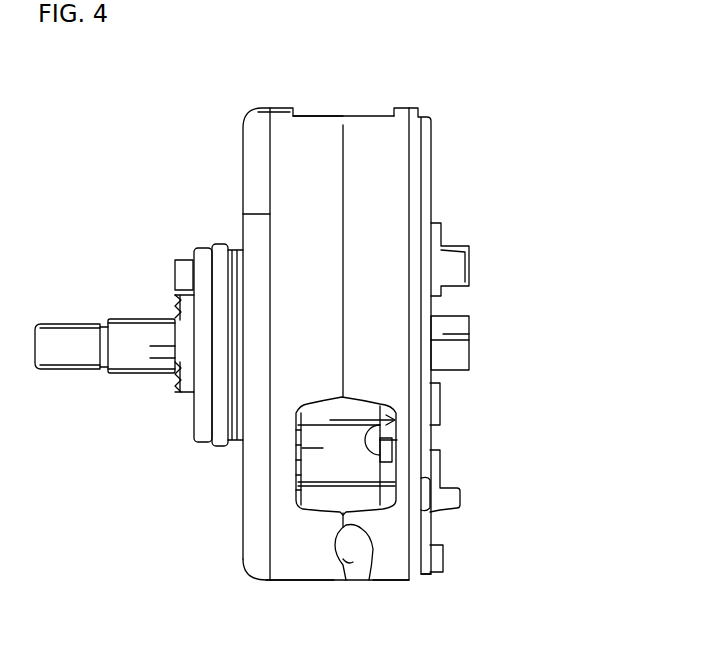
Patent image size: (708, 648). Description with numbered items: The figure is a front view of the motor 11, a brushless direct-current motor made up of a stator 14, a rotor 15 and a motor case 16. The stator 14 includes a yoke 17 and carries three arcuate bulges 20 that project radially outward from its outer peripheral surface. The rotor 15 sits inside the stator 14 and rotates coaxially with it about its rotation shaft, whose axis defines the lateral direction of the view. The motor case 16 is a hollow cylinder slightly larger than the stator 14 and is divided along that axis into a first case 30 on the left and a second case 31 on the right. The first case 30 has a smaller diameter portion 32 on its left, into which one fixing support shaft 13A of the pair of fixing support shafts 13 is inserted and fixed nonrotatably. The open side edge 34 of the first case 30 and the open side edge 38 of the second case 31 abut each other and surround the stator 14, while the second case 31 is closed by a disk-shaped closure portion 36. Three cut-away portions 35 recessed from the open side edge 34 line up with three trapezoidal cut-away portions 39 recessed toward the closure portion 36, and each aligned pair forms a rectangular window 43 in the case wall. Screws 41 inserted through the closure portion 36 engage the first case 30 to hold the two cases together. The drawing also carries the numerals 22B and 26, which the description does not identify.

The motor 11 is at (298, 644).
The fixing support shafts 13 is at (137, 346).
The fixing support shaft 13A is at (72, 351).
The stator 14 is at (344, 115).
The rotor 15 is at (443, 326).
The motor case 16 is at (167, 105).
The yoke 17 is at (323, 412).
The bulges 20 is at (217, 518).
The terminal portion 22B is at (469, 327).
The bearing portion 26 is at (243, 214).
The first case 30 is at (304, 167).
The second case 31 is at (379, 160).
The smaller diameter portion 32 is at (200, 413).
The open side edge 34 is at (343, 175).
The cut-away portions 35 is at (302, 112).
The closure portion 36 is at (431, 143).
The open side edge 38 is at (336, 249).
The cut-away portions 39 is at (385, 458).
The screws 41 is at (442, 557).
The windows 43 is at (278, 43).